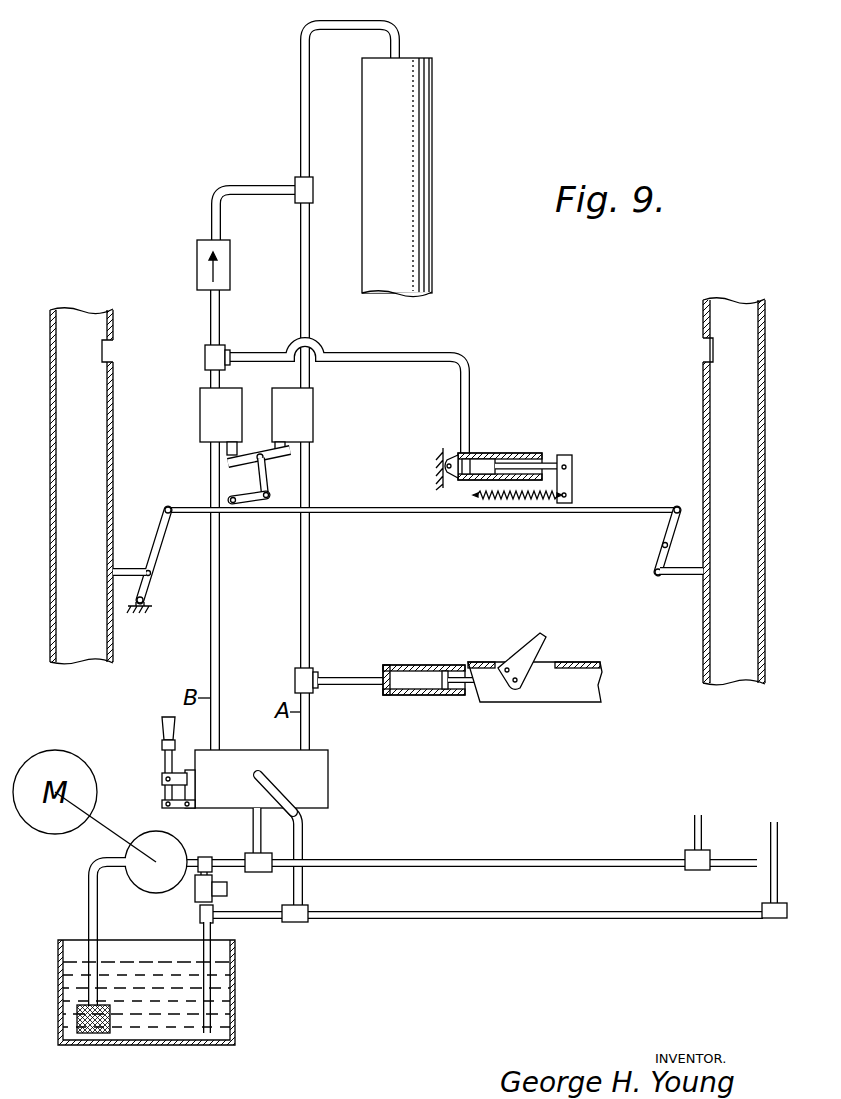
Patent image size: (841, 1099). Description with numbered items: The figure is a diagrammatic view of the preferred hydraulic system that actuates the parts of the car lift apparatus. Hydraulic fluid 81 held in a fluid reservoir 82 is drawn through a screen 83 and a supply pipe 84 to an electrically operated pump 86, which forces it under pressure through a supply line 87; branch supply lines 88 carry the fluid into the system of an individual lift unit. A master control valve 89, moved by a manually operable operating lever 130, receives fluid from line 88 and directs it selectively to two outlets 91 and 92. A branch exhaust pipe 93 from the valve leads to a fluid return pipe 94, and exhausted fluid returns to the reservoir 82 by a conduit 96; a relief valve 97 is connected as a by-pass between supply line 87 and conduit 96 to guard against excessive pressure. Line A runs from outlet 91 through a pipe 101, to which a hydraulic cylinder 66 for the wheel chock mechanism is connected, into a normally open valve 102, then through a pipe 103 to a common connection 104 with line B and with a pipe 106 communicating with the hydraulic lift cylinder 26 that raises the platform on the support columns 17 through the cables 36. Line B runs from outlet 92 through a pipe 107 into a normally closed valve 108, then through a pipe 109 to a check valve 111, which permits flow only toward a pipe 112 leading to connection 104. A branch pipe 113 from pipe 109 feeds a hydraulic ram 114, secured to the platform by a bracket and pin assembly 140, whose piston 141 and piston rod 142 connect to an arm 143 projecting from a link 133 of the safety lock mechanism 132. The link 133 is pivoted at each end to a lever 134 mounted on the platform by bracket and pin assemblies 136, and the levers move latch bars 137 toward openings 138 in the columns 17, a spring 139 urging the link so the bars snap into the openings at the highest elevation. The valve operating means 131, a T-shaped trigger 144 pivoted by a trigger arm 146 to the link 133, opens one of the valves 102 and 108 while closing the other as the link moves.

The support column 17 is at (50, 403).
The hydraulic lift cylinder 26 is at (432, 115).
The cable 36 is at (662, 545).
The hydraulic cylinder 66 is at (428, 695).
The hydraulic fluid 81 is at (180, 1020).
The fluid reservoir 82 is at (148, 1045).
The screen 83 is at (90, 1035).
The supply pipe 84 is at (88, 911).
The pump 86 is at (152, 835).
The supply line 87 is at (226, 860).
The branch supply line 88 is at (262, 838).
The master control valve 89 is at (305, 782).
The outlet 91 is at (312, 752).
The outlet 92 is at (218, 750).
The branch exhaust pipe 93 is at (303, 886).
The fluid return pipe 94 is at (382, 920).
The conduit 96 is at (213, 928).
The relief valve 97 is at (195, 890).
The pipe 101 is at (310, 612).
The valve A' 102 is at (313, 427).
The pipe 103 is at (310, 316).
The connection 104 is at (313, 185).
The pipe 106 is at (300, 107).
The pipe 107 is at (220, 612).
The valve B' 108 is at (200, 398).
The pipe 109 is at (218, 325).
The check valve 111 is at (230, 267).
The pipe 112 is at (253, 195).
The branch pipe 113 is at (445, 352).
The hydraulic ram 114 is at (518, 452).
The operating lever 130 is at (160, 728).
The valve operating means 131 is at (233, 476).
The safety lock mechanism 132 is at (365, 514).
The link 133 is at (428, 514).
The lever 134 is at (160, 541).
The bracket and pin assembly 136 is at (150, 606).
The latch bar 137 is at (125, 566).
The opening 138 is at (108, 348).
The spring 139 is at (528, 497).
The bracket and pin assembly 140 is at (444, 452).
The piston 141 is at (505, 460).
The piston rod 142 is at (549, 462).
The arm 143 is at (572, 478).
The trigger 144 is at (275, 462).
The trigger arm 146 is at (252, 504).